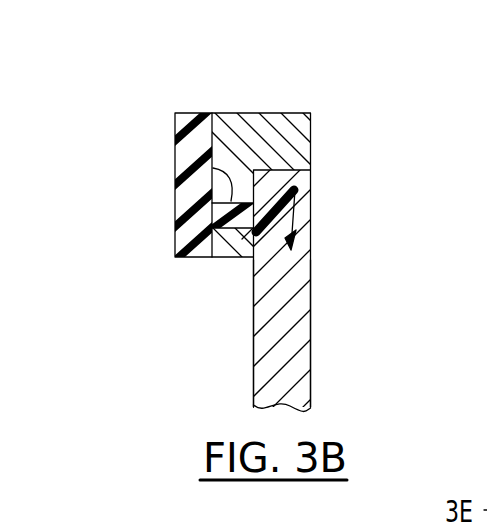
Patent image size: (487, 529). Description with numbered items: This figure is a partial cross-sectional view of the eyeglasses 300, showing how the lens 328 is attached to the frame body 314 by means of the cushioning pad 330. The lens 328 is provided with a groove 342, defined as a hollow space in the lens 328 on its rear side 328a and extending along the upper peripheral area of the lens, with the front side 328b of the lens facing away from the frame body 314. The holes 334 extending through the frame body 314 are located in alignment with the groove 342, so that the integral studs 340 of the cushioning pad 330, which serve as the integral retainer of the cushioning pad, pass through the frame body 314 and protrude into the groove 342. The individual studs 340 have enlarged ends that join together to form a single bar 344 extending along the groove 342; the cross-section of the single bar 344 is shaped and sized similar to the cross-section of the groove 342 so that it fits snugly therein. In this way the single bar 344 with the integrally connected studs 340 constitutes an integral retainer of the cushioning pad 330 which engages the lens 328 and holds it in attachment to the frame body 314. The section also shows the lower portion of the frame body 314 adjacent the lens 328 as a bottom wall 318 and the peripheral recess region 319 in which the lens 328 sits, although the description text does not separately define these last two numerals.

The eyeglasses 300 is at (264, 244).
The frame body 314 is at (254, 112).
The bottom wall 318 is at (242, 256).
The boss 319 is at (304, 175).
The lens 328 is at (284, 293).
The rear side of the lens 328a is at (253, 392).
The second side of stem 328b is at (311, 387).
The cushioning pad 330 is at (188, 112).
The holes 334 is at (213, 168).
The integral studs 340 is at (212, 215).
The groove 342 is at (280, 245).
The single bar 344 is at (292, 222).